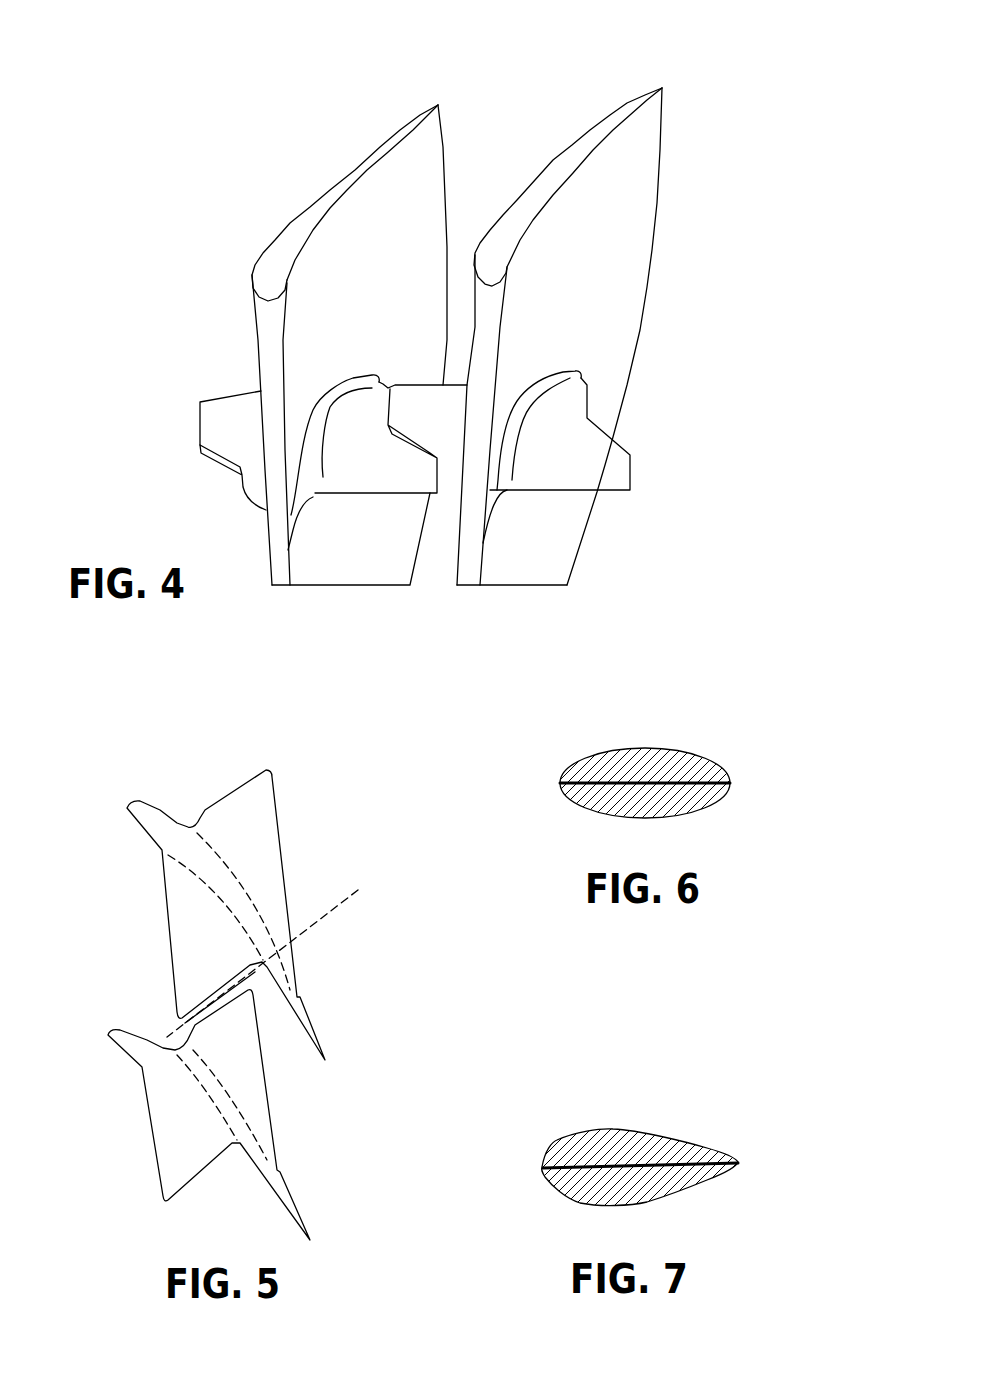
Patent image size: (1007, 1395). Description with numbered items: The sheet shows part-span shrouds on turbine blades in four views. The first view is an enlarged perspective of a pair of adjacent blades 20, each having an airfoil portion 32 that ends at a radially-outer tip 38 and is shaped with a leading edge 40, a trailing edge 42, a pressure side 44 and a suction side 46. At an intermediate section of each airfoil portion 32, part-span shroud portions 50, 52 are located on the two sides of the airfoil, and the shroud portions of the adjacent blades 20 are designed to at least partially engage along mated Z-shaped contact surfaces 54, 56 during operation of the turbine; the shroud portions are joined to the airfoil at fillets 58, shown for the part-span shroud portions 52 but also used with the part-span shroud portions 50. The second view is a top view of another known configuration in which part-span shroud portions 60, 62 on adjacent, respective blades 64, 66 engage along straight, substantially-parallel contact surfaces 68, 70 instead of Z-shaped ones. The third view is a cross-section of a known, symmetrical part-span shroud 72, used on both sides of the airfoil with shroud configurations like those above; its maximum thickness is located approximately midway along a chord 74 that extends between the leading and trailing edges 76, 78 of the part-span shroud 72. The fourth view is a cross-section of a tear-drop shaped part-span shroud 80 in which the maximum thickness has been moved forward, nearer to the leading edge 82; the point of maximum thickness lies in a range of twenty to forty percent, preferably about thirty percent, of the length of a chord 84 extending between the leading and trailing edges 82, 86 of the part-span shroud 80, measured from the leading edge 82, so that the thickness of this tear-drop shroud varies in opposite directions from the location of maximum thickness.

In FIG. 4, the blade 20 is at (112, 226).
In FIG. 4, the airfoil portion 32 is at (358, 278).
In FIG. 4, the radially-outer tip 38 is at (285, 237).
In FIG. 4, the leading edge 40 is at (268, 328).
In FIG. 4, the trailing edge 42 is at (443, 145).
In FIG. 4, the pressure side 44 is at (332, 168).
In FIG. 4, the suction side 46 is at (433, 217).
In FIG. 4, the part-span shroud portion 50 is at (233, 425).
In FIG. 4, the part-span shroud portion 52 is at (375, 440).
In FIG. 4, the Z-shaped contact surface 54 is at (222, 463).
In FIG. 4, the Z-shaped contact surface 56 is at (396, 448).
In FIG. 4, the fillet 58 is at (323, 405).
In FIG. 5, the part-span shroud portion 60 is at (188, 925).
In FIG. 5, the part-span shroud portion 62 is at (257, 1072).
In FIG. 5, the blade 64 is at (164, 806).
In FIG. 5, the blade 66 is at (120, 1022).
In FIG. 5, the contact surface 68 is at (202, 1010).
In FIG. 5, the contact surface 70 is at (217, 995).
In FIG. 6, the part-span shroud 72 is at (646, 730).
In FIG. 6, the chord 74 is at (592, 781).
In FIG. 6, the leading edge 76 is at (560, 785).
In FIG. 6, the trailing edge 78 is at (730, 792).
In FIG. 7, the part-span shroud 80 is at (651, 1111).
In FIG. 7, the leading edge 82 is at (543, 1165).
In FIG. 7, the chord 84 is at (667, 1160).
In FIG. 7, the trailing edge 86 is at (738, 1157).